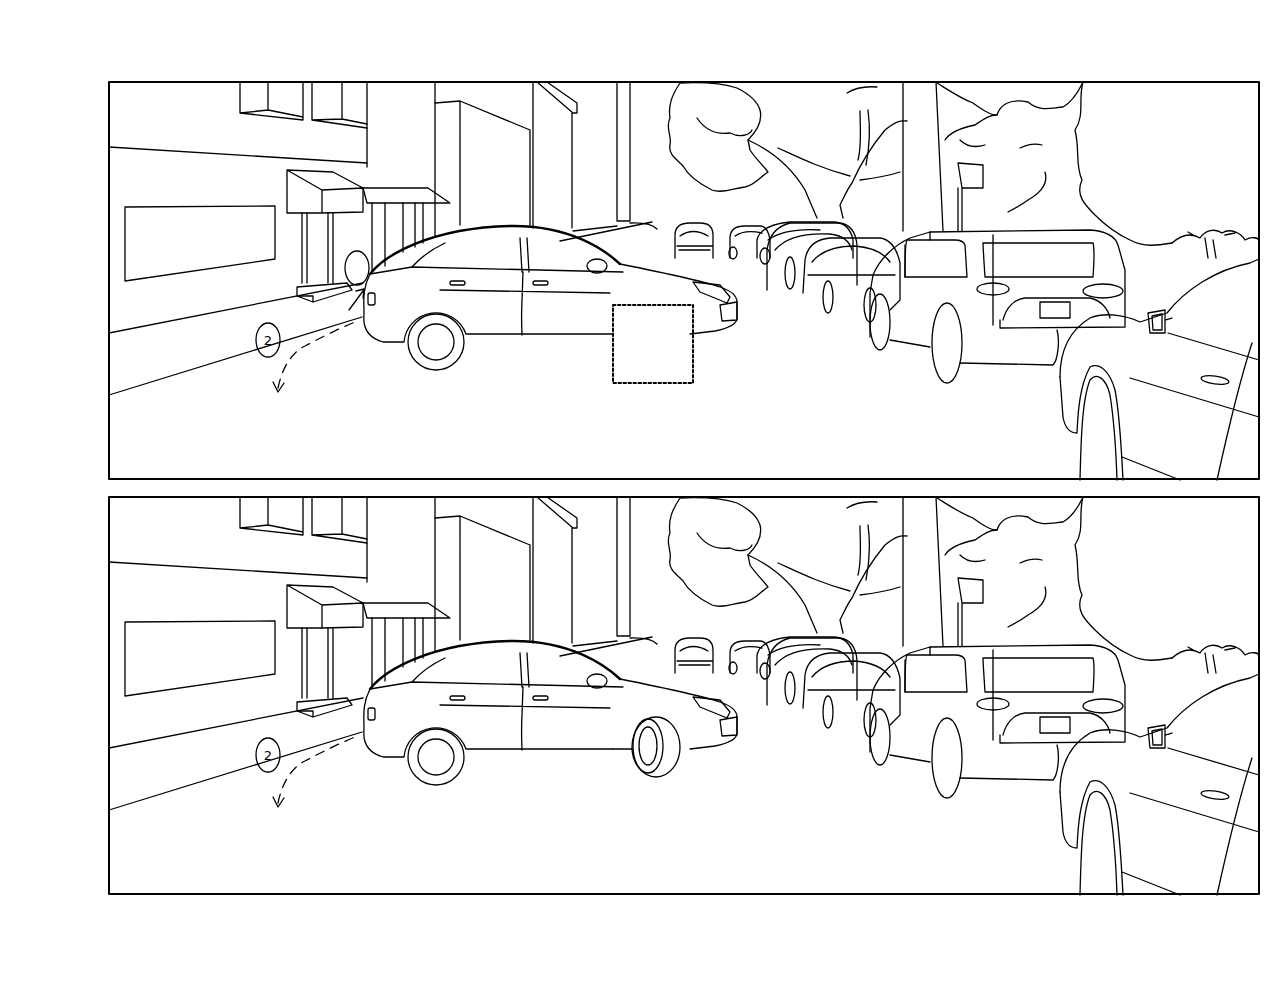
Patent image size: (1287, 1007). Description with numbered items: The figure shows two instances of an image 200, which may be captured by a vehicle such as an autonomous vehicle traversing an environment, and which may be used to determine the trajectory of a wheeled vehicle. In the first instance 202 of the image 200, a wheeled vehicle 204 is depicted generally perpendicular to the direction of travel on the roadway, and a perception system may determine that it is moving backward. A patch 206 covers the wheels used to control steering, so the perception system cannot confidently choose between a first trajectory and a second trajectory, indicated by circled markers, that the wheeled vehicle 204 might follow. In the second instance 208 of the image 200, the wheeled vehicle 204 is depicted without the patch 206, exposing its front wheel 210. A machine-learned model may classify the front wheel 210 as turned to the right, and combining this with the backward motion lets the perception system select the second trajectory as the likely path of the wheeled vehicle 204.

The image 200 is at (227, 49).
The first instance 202 is at (1015, 82).
The wheeled vehicle 204 is at (545, 320).
The patch 206 is at (685, 367).
The second instance 208 is at (1015, 894).
The front wheel 210 is at (668, 760).